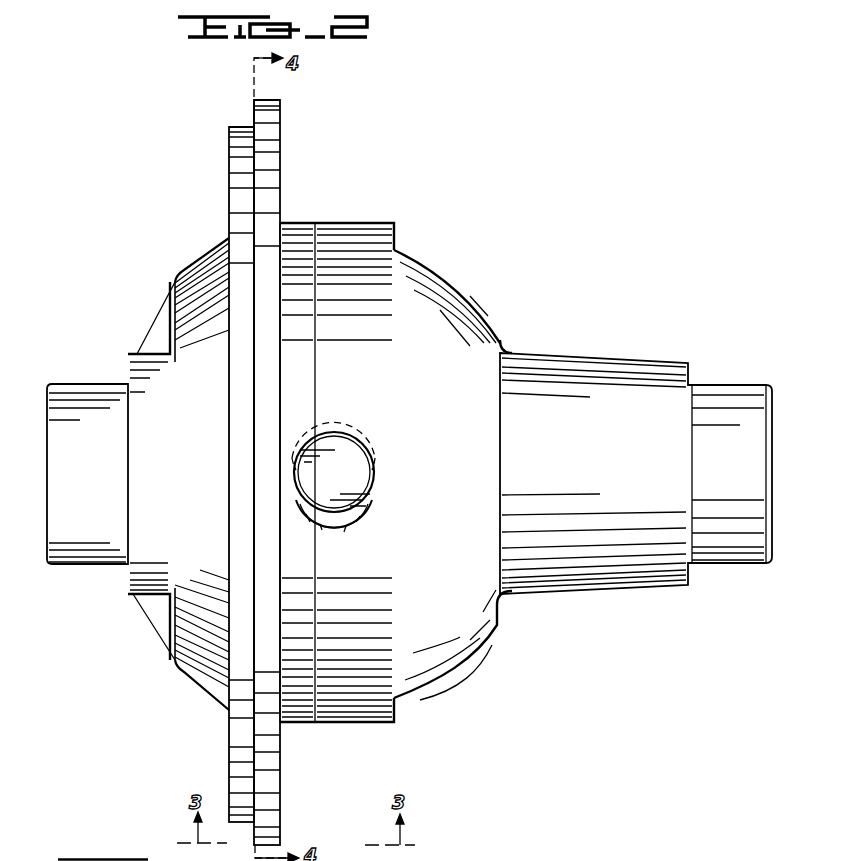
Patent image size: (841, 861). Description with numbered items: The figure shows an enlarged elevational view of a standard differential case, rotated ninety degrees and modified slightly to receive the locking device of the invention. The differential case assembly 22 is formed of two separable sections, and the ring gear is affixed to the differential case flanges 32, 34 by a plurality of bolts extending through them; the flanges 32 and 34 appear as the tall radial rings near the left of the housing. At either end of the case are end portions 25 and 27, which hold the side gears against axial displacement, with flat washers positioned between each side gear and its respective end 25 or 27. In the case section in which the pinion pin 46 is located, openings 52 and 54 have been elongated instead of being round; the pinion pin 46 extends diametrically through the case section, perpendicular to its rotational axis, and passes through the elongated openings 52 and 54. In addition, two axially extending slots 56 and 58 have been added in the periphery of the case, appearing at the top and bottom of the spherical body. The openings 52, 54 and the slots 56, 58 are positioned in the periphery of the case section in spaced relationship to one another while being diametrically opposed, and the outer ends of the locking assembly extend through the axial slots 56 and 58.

The differential case assembly 22 is at (242, 118).
The end portion of the case 25 is at (170, 619).
The end portion of the case 27 is at (500, 610).
The differential case flange 32 is at (229, 146).
The differential case flange 34 is at (268, 99).
The pinion pin 46 is at (346, 486).
The elongated opening 52 is at (375, 417).
The elongated opening 54 is at (333, 532).
The axially extending slot 56 is at (337, 221).
The axially extending slot 58 is at (334, 724).